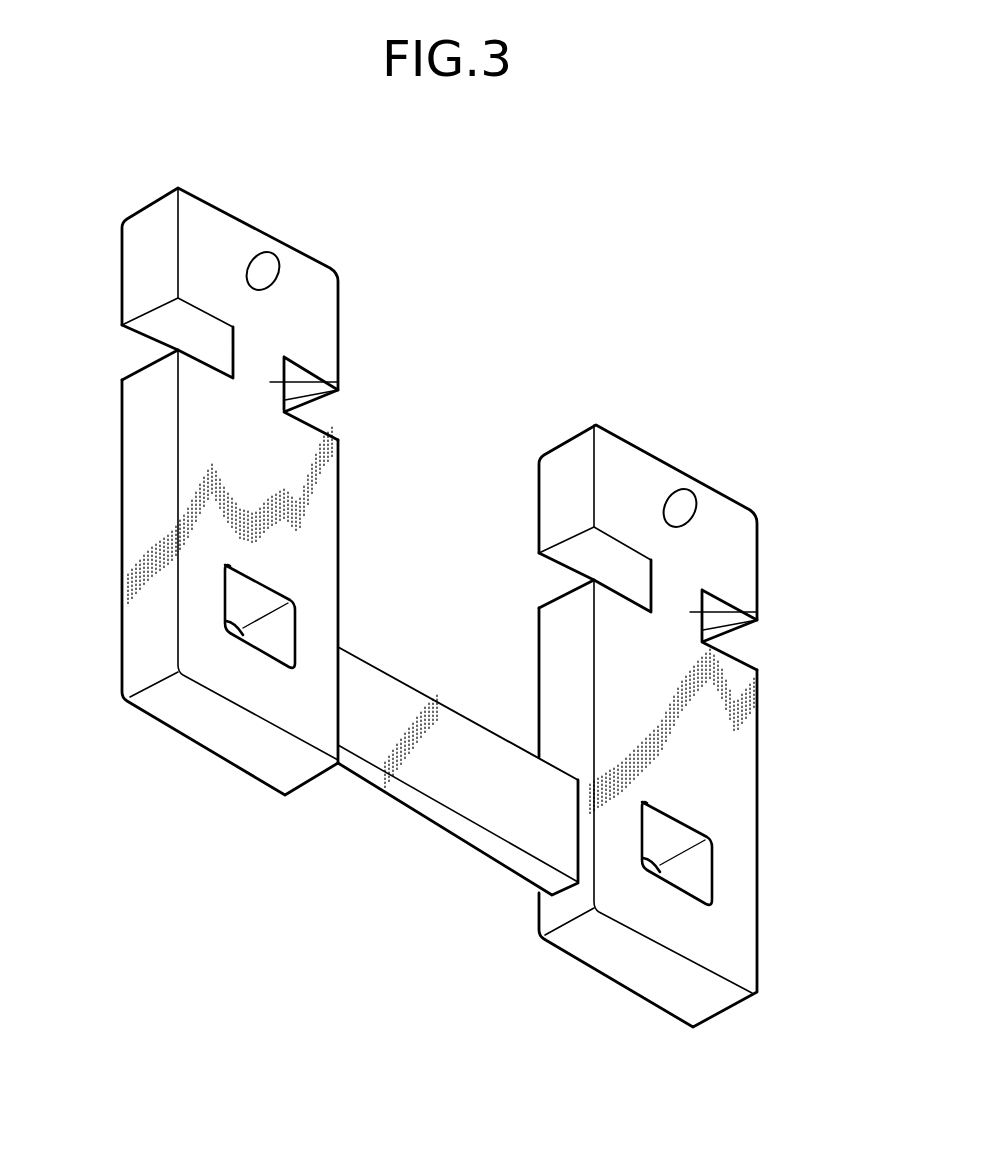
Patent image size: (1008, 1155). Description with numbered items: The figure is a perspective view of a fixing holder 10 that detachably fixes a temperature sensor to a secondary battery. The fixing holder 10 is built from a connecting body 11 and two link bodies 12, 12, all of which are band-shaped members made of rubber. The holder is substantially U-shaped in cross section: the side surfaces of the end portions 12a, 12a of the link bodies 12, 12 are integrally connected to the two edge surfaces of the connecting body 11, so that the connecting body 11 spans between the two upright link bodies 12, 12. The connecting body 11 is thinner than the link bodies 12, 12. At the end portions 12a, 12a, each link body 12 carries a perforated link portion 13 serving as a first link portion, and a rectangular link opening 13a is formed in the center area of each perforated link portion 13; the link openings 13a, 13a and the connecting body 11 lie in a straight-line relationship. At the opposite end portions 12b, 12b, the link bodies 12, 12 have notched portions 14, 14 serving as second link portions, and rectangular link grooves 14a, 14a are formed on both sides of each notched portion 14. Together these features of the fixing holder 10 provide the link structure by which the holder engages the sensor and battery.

The fixing holder 10 is at (411, 942).
The connecting body 11 is at (390, 808).
The link body 12 is at (197, 775).
The end portion 12a is at (200, 638).
The end portion 12b is at (190, 266).
The perforated link portion 13 is at (224, 552).
The link opening 13a is at (230, 597).
The notched portion 14 is at (338, 396).
The link groove 14a is at (234, 350).